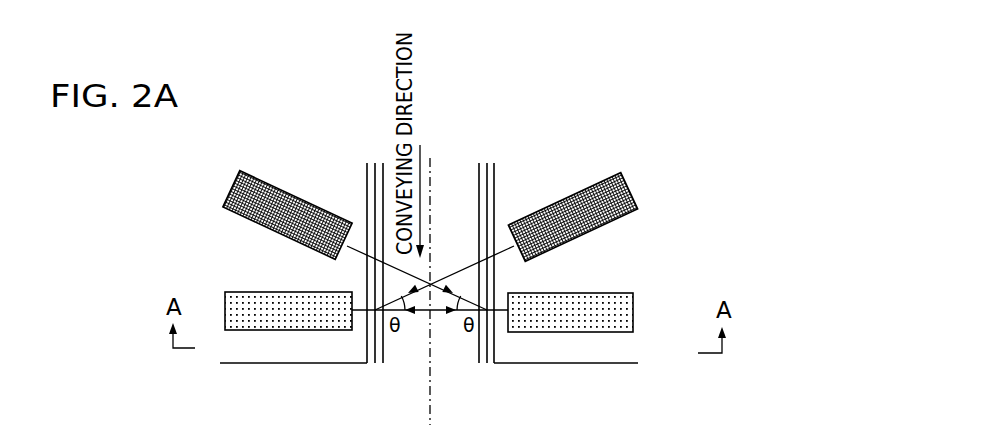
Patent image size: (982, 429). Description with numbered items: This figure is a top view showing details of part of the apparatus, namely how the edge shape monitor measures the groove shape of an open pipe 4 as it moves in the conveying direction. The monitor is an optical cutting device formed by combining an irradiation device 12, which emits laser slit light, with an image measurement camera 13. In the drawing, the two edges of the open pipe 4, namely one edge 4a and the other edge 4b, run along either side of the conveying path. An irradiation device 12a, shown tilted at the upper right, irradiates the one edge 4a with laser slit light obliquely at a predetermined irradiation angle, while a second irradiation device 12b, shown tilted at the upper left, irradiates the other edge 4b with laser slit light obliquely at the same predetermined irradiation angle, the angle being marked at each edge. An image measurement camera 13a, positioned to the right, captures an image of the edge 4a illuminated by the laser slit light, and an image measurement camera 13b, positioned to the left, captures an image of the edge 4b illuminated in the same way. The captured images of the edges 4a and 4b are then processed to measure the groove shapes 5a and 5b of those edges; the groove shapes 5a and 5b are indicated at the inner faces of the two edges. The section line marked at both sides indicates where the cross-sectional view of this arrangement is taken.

The open pipe 4 is at (335, 350).
The edge of the open pipe 4a is at (372, 363).
The other edge of the open pipe 4b is at (488, 363).
The groove shape 5a is at (390, 362).
The groove shape 5b is at (470, 362).
The irradiation device 12 is at (444, 177).
The irradiation device 12a is at (577, 194).
The irradiation device 12b is at (322, 208).
The image measurement camera 13 is at (509, 279).
The image measurement camera 13a is at (596, 292).
The image measurement camera 13b is at (278, 292).